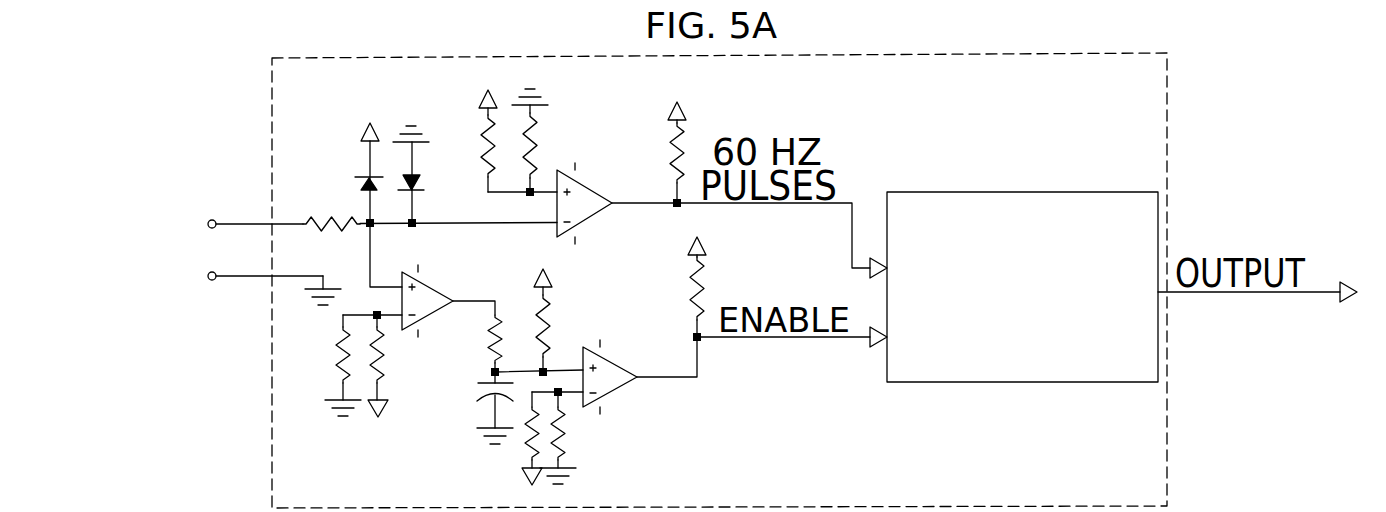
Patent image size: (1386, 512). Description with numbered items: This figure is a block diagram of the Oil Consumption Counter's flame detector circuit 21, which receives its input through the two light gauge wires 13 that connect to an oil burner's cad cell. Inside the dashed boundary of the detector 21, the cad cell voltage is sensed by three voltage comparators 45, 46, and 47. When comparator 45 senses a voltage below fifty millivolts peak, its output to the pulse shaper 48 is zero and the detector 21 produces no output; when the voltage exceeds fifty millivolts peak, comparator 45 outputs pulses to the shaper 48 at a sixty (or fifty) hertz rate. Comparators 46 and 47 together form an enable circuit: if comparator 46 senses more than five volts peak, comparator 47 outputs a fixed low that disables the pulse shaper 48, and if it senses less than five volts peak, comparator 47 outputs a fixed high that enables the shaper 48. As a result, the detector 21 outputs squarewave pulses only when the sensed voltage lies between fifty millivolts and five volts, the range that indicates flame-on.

The light gauge wires 13 is at (207, 228).
The flame detector circuit 21 is at (927, 53).
The voltage comparator 45 is at (583, 180).
The voltage comparator 46 is at (447, 283).
The voltage comparator 47 is at (615, 360).
The pulse shaper 48 is at (1022, 188).